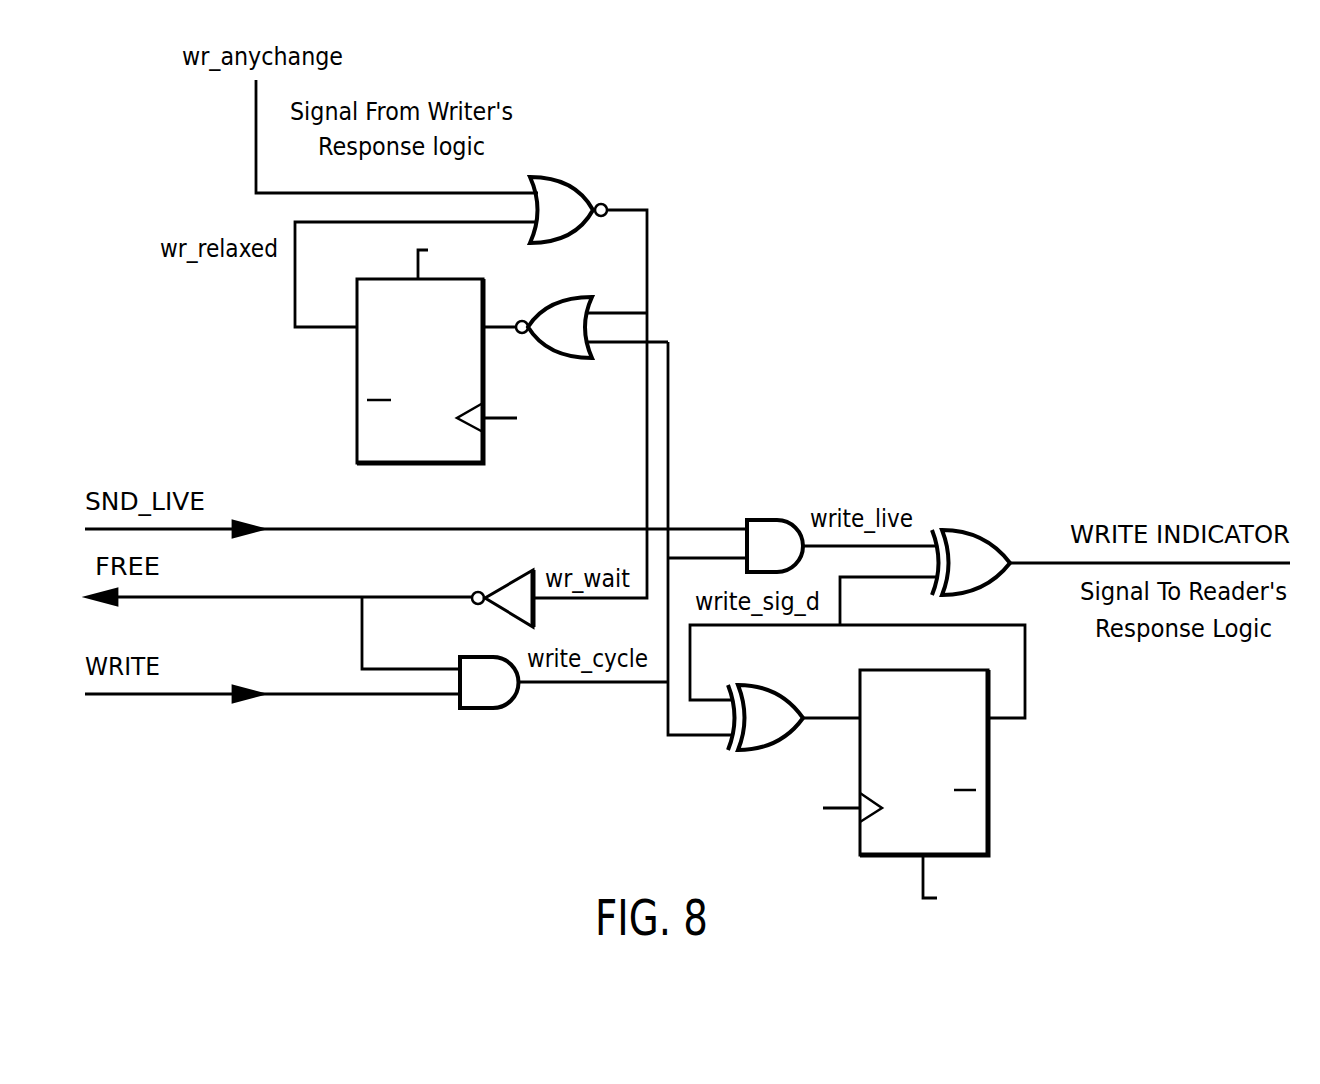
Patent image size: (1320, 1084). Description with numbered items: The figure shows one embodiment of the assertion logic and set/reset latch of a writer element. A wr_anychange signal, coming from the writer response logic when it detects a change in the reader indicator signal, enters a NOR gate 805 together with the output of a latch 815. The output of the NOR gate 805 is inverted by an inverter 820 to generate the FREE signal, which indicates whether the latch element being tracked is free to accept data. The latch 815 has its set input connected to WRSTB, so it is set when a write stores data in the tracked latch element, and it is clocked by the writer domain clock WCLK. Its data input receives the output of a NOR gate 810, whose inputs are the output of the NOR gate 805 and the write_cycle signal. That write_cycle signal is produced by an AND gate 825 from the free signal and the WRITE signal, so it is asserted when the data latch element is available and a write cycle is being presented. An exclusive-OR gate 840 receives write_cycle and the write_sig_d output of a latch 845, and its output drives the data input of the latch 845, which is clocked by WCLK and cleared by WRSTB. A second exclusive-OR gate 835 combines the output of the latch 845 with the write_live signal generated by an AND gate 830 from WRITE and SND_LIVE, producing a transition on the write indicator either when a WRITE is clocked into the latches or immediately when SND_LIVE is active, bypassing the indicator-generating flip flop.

The NOR gate 805 is at (577, 177).
The NOR gate 810 is at (552, 358).
The latch 815 is at (355, 373).
The inverter 820 is at (502, 583).
The AND gate 825 is at (482, 710).
The AND gate 830 is at (765, 520).
The second exclusive-OR gate 835 is at (963, 530).
The exclusive-OR gate 840 is at (750, 755).
The latch 845 is at (988, 765).